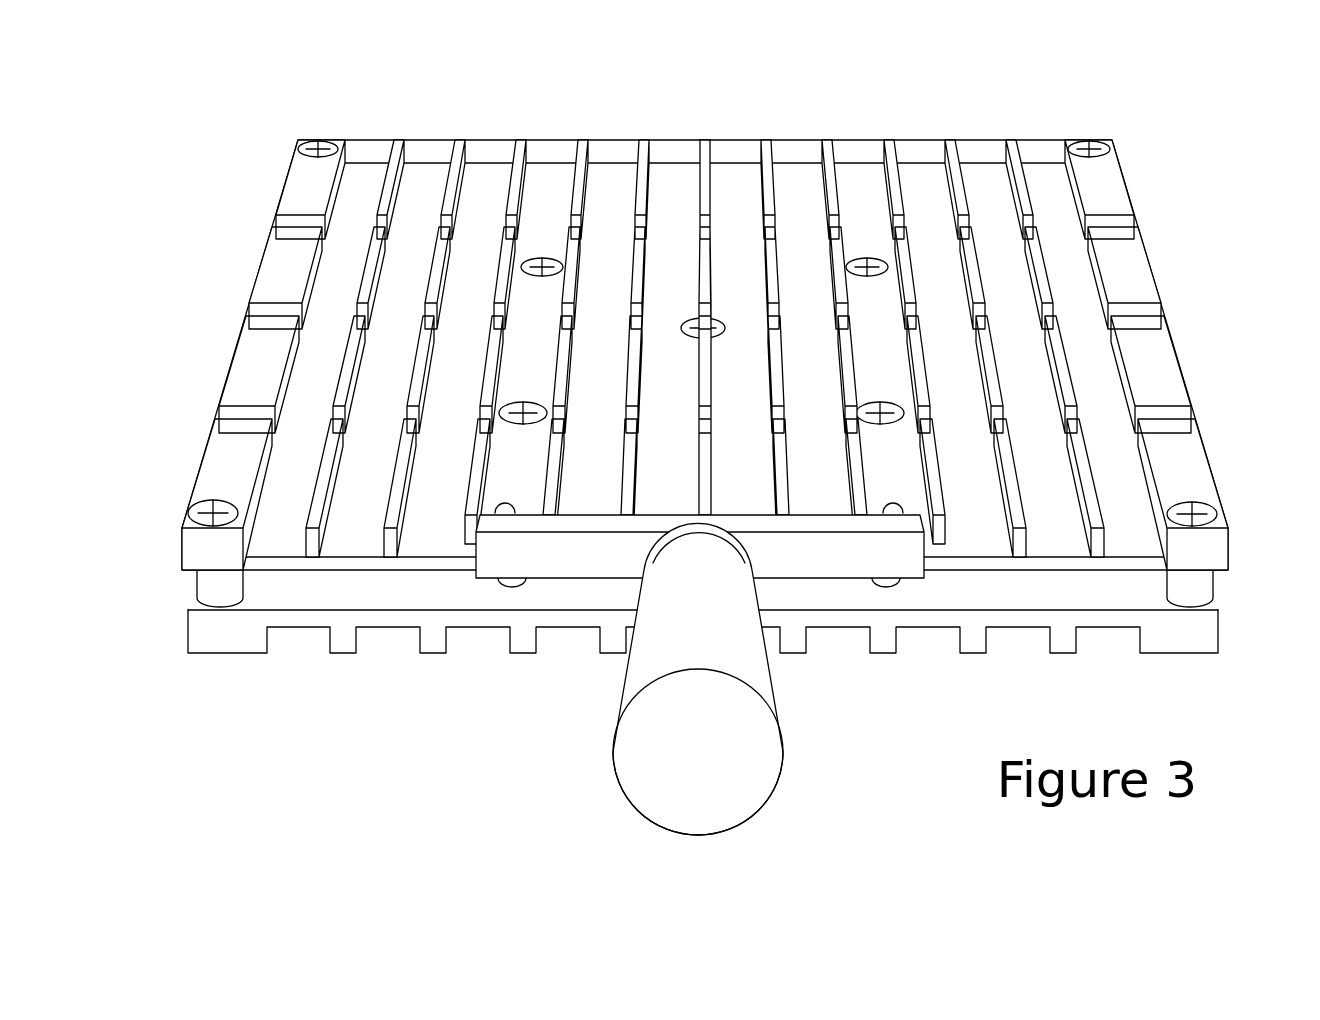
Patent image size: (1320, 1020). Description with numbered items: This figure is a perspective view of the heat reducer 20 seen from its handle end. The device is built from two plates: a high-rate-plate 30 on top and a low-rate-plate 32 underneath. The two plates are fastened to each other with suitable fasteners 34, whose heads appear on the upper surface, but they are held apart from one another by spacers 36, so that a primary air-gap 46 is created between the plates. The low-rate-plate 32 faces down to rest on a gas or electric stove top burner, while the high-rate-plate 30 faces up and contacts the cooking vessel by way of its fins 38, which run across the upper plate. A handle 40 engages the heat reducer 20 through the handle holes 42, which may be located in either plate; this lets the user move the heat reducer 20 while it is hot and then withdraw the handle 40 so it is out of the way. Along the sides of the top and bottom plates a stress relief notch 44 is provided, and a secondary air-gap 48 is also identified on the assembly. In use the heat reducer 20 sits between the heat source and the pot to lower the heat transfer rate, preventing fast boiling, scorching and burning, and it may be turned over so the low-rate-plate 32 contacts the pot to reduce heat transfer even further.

The heat reducer 20 is at (713, 445).
The high-rate-plate 30 is at (1188, 485).
The low-rate-plate 32 is at (1178, 633).
The fastener 34 is at (211, 503).
The spacer 36 is at (208, 587).
The fins 38 is at (1011, 137).
The handle 40 is at (642, 780).
The handle holes 42 is at (523, 585).
The stress relief notch 44 is at (1165, 313).
The primary air-gap 46 is at (1032, 588).
The secondary air-gap 48 is at (430, 143).